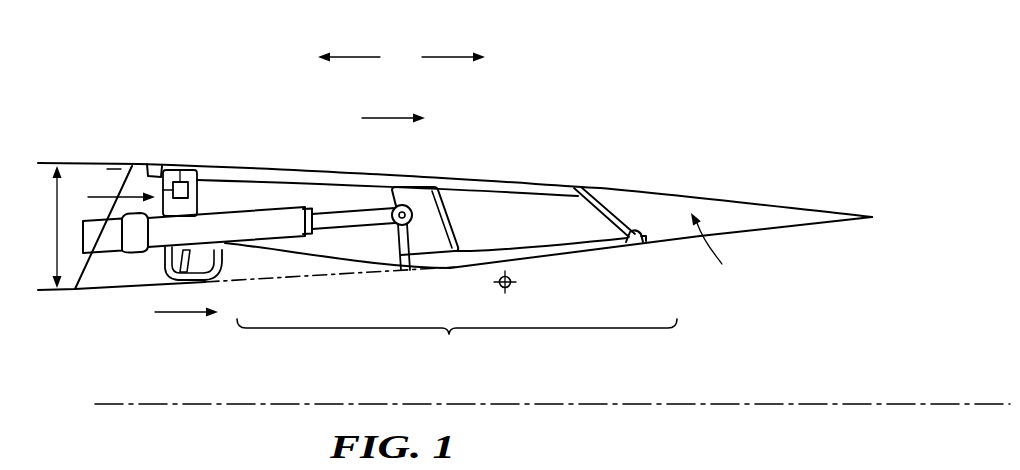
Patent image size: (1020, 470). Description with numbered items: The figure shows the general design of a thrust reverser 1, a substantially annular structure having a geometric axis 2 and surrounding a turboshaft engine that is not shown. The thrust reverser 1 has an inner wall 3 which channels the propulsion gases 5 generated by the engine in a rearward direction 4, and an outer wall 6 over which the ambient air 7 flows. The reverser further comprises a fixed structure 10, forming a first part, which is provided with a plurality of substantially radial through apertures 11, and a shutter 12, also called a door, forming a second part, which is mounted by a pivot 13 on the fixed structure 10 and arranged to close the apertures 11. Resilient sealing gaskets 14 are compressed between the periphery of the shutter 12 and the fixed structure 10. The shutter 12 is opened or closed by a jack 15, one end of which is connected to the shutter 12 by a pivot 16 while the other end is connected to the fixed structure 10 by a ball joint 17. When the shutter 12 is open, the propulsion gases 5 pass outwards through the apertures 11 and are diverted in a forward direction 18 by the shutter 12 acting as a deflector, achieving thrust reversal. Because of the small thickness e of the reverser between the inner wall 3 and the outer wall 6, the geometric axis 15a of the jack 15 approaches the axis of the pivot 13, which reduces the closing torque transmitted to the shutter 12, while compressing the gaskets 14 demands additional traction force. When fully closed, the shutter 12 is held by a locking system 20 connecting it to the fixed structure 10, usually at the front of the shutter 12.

The thrust reverser 1 is at (90, 76).
The geometric axis 2 is at (145, 403).
The inner wall 3 is at (92, 291).
The rearward direction 4 is at (443, 57).
The propulsion gases 5 is at (177, 313).
The outer wall 6 is at (122, 164).
The ambient air 7 is at (382, 118).
The fixed structure 10 is at (417, 223).
The radial through apertures 11 is at (457, 345).
The shutter 12 is at (380, 189).
The pivot 13 is at (512, 280).
The resilient sealing gaskets 14 is at (156, 167).
The jack 15 is at (238, 236).
The geometric axis of the jack 15a is at (339, 230).
The pivot 16 is at (403, 228).
The ball joint 17 is at (137, 250).
The forward direction 18 is at (363, 57).
The locking system 20 is at (184, 188).
The thickness e is at (56, 227).